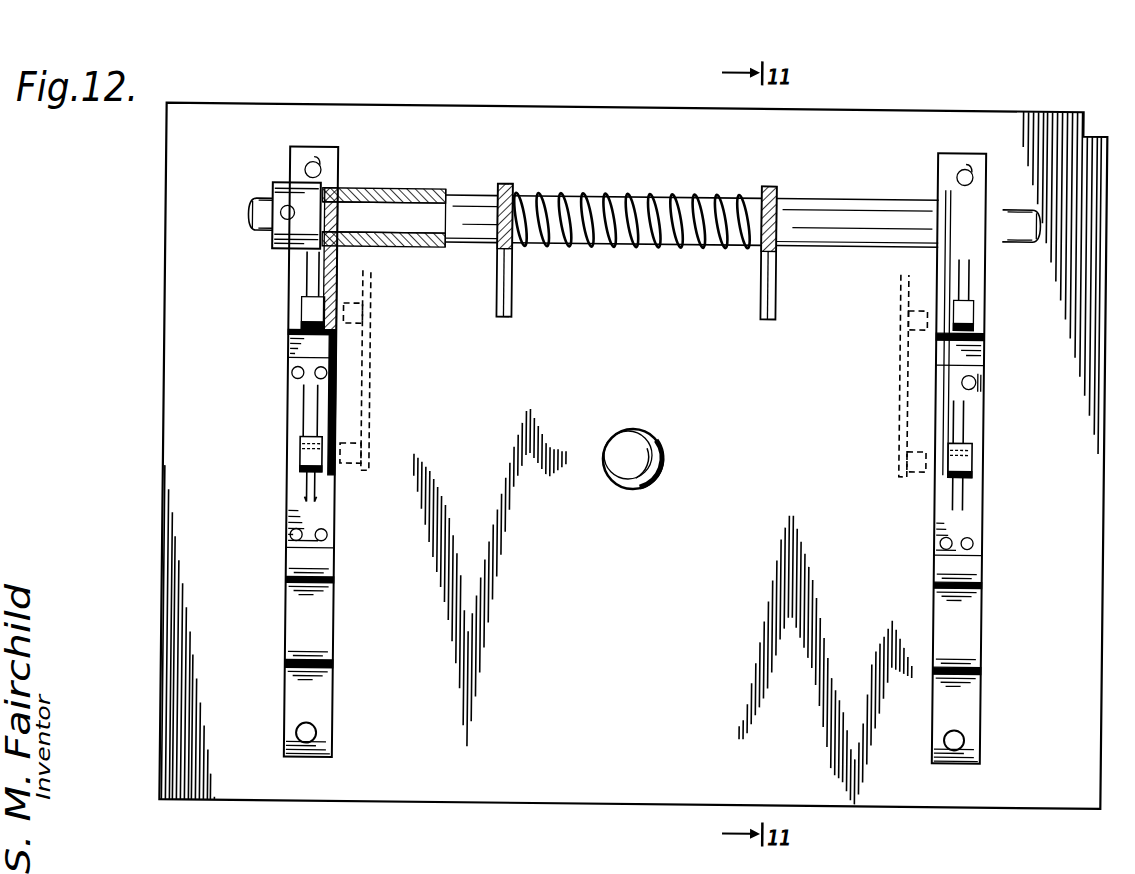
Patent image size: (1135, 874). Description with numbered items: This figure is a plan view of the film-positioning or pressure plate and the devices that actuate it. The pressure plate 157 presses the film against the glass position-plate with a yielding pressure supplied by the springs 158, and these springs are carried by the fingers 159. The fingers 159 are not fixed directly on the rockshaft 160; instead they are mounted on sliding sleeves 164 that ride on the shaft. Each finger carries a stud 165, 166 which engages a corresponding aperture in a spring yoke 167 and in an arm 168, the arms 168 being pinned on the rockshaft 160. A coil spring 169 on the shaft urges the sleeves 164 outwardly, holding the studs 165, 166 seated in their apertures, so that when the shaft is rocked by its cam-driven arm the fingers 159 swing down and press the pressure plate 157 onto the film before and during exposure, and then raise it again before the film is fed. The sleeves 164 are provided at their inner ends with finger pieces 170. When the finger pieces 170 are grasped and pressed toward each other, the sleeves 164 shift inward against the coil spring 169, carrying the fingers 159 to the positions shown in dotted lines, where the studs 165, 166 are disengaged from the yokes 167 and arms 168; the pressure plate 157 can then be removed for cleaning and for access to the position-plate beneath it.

The pressure plate 157 is at (633, 456).
The springs 158 is at (324, 633).
The fingers 159 is at (322, 391).
The rockshaft 160 is at (260, 209).
The sliding sleeves 164 is at (466, 184).
The stud 165 is at (308, 458).
The stud 166 is at (963, 456).
The spring yokes 167 is at (307, 486).
The arms 168 is at (311, 283).
The coil spring 169 is at (688, 181).
The finger pieces 170 is at (510, 298).